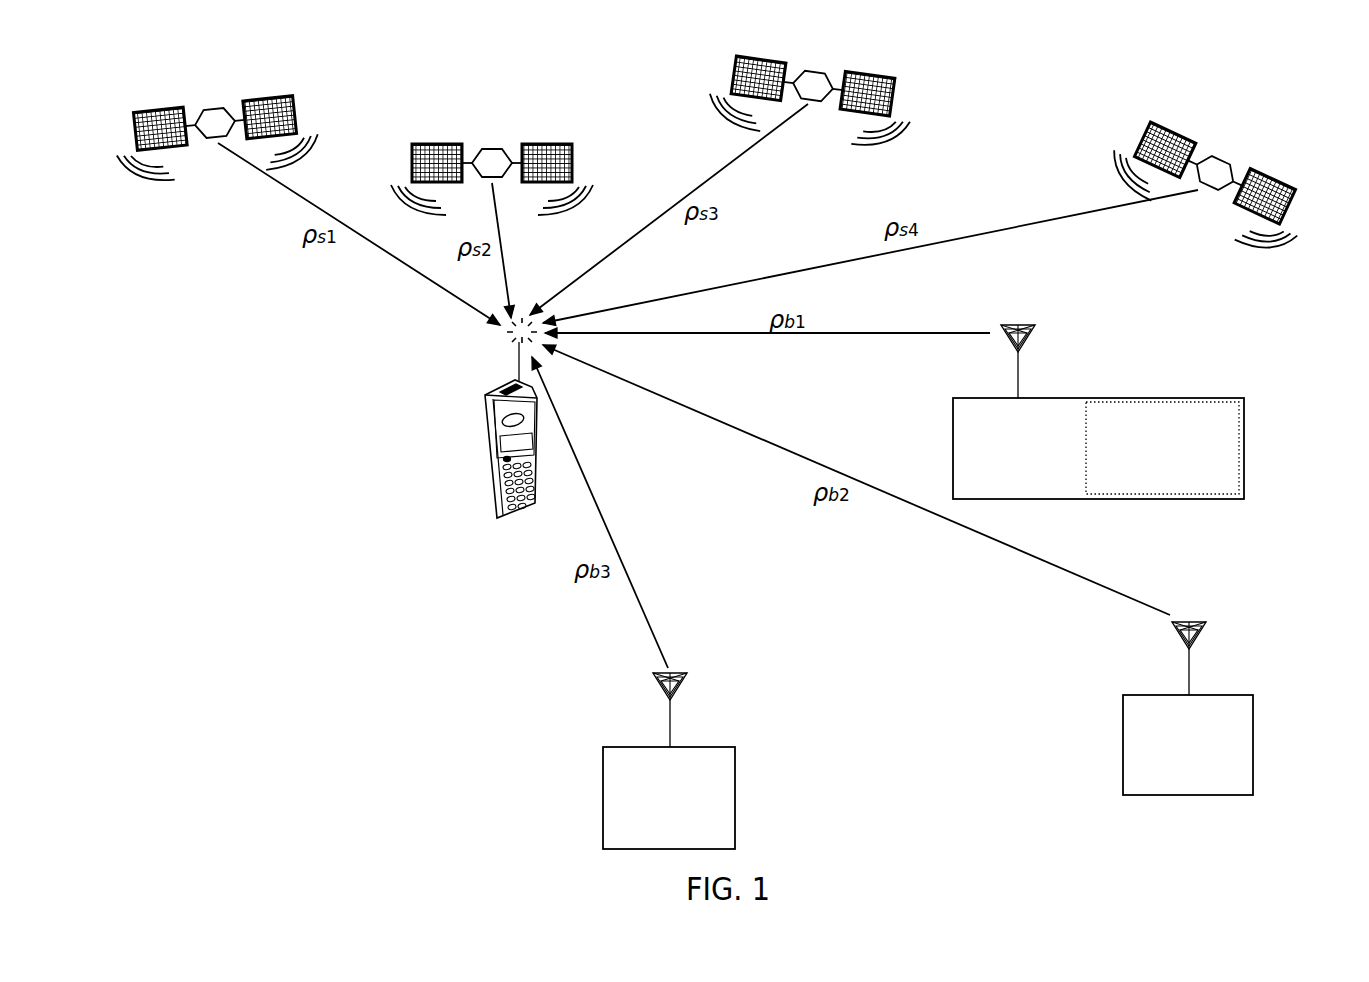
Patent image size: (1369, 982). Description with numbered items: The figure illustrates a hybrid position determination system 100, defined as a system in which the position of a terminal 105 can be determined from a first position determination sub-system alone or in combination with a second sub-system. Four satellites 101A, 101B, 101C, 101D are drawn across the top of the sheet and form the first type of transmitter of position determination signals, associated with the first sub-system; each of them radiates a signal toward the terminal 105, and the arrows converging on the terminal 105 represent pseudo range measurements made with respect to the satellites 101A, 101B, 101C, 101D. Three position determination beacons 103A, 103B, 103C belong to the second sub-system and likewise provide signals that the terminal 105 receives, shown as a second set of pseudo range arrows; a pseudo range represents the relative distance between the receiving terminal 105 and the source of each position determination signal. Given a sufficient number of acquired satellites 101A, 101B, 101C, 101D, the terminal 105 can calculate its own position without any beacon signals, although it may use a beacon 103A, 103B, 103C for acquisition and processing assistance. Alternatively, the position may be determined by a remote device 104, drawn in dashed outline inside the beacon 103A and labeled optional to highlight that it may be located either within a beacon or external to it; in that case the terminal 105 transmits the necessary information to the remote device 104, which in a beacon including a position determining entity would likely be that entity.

The hybrid position determination system 100 is at (1057, 112).
The satellite 101A is at (267, 100).
The satellite 101B is at (546, 142).
The satellite 101C is at (868, 78).
The satellite 101D is at (1272, 176).
The position determination beacon 103A is at (1050, 398).
The position determination beacon 103B is at (1222, 695).
The position determination beacon 103C is at (704, 747).
The remote device 104 is at (1220, 496).
The position determination terminal 105 is at (498, 520).